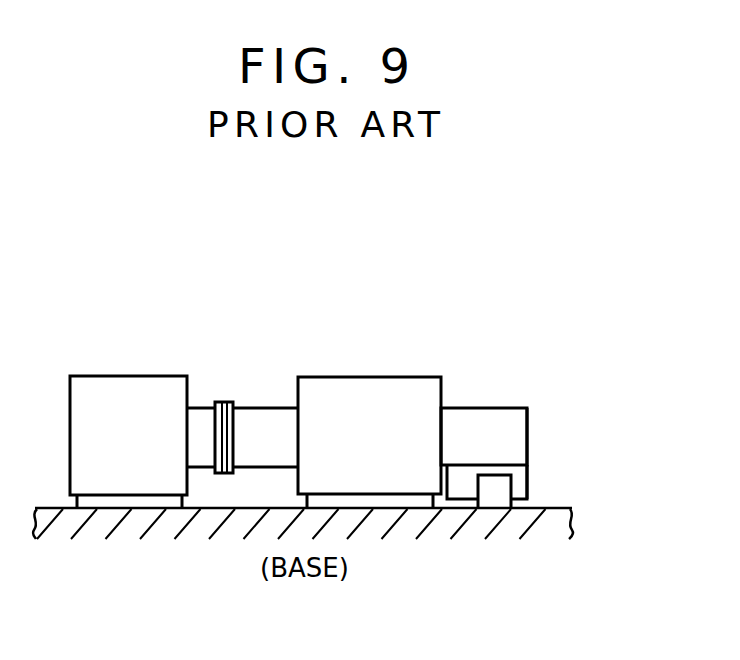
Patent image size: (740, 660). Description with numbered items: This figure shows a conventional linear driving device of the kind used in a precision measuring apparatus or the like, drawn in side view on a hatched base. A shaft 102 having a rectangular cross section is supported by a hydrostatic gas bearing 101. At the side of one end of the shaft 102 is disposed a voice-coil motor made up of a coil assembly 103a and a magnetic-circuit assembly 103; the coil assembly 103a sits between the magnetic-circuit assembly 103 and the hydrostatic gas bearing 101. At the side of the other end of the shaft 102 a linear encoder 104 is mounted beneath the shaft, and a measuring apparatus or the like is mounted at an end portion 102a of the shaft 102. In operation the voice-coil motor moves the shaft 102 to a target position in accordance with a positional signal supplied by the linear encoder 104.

The hydrostatic gas bearing 101 is at (387, 385).
The shaft 102 is at (475, 407).
The end portion of the shaft 102a is at (528, 440).
The magnetic-circuit assembly 103 is at (117, 386).
The coil assembly 103a is at (207, 413).
The linear encoder 104 is at (497, 498).